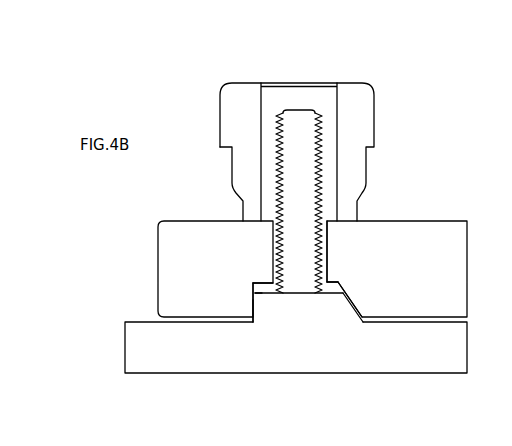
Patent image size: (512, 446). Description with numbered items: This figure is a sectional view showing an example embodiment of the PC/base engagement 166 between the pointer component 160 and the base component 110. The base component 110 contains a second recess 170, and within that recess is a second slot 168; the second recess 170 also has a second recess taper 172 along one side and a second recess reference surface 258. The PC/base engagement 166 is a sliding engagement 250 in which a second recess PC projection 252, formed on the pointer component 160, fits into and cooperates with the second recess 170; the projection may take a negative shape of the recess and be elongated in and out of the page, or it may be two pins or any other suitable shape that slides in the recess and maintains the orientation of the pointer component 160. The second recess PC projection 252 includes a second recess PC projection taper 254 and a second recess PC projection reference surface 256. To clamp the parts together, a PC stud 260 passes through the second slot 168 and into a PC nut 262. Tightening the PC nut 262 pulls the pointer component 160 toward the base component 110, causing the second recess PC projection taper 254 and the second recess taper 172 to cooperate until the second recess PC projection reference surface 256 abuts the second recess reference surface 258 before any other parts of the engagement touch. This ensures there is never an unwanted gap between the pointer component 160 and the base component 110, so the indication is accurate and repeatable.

The PC/base engagement 166 is at (303, 158).
The PC stud 260 is at (298, 118).
The PC nut 262 is at (355, 115).
The base component 110 is at (193, 256).
The second slot 168 is at (328, 242).
The second recess 170 is at (338, 283).
The second recess taper 172 is at (355, 300).
The sliding engagement 250 is at (274, 306).
The second recess PC projection 252 is at (313, 326).
The second recess PC projection taper 254 is at (352, 316).
The second recess PC projection reference surface 256 is at (257, 316).
The second recess reference surface 258 is at (252, 300).
The pointer component 160 is at (438, 361).